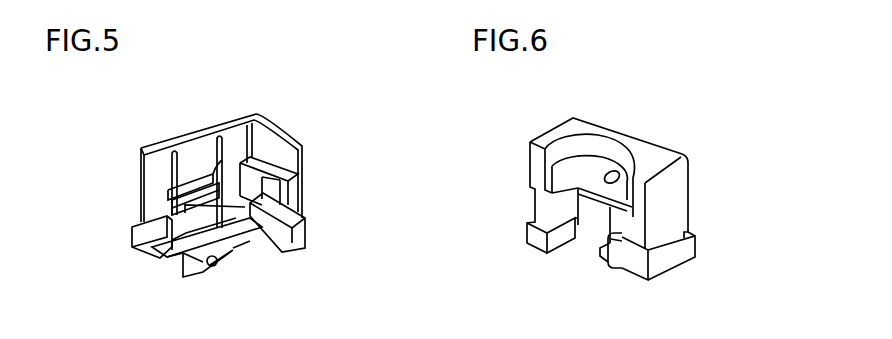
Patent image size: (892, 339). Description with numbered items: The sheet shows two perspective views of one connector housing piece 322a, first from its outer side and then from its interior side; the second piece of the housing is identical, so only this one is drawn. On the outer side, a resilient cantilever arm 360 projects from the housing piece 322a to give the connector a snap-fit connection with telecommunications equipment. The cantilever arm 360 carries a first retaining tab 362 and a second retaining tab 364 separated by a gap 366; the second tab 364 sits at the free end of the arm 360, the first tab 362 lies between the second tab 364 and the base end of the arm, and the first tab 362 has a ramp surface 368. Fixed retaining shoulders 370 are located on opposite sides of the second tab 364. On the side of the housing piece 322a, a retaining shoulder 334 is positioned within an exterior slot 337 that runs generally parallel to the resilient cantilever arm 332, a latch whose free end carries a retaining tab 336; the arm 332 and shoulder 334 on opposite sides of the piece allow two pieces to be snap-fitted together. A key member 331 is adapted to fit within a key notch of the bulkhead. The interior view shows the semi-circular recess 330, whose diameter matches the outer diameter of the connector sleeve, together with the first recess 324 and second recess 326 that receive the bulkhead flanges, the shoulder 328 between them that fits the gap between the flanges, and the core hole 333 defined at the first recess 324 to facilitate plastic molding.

In FIG. 5, the housing piece 322a is at (309, 106).
In FIG. 6, the housing piece 322a is at (687, 112).
In FIG. 5, the resilient cantilever arm 360 is at (192, 155).
In FIG. 5, the ramp surface 368 is at (185, 180).
In FIG. 5, the first retaining tab 362 is at (173, 182).
In FIG. 5, the gap 366 is at (187, 205).
In FIG. 5, the exterior slot 337 is at (258, 173).
In FIG. 5, the retaining shoulder 334 is at (278, 188).
In FIG. 5, the fixed retaining shoulder 370 is at (140, 228).
In FIG. 5, the second retaining tab 364 is at (180, 238).
In FIG. 5, the key member 331 is at (228, 251).
In FIG. 6, the key member 331 is at (605, 254).
In FIG. 6, the semi-circular recess 330 is at (617, 150).
In FIG. 6, the first recess 324 is at (577, 169).
In FIG. 6, the core hole 333 is at (608, 170).
In FIG. 6, the shoulder 328 is at (567, 207).
In FIG. 6, the second recess 326 is at (580, 232).
In FIG. 6, the retaining tab 336 is at (614, 236).
In FIG. 6, the resilient cantilever arm 332 is at (630, 248).